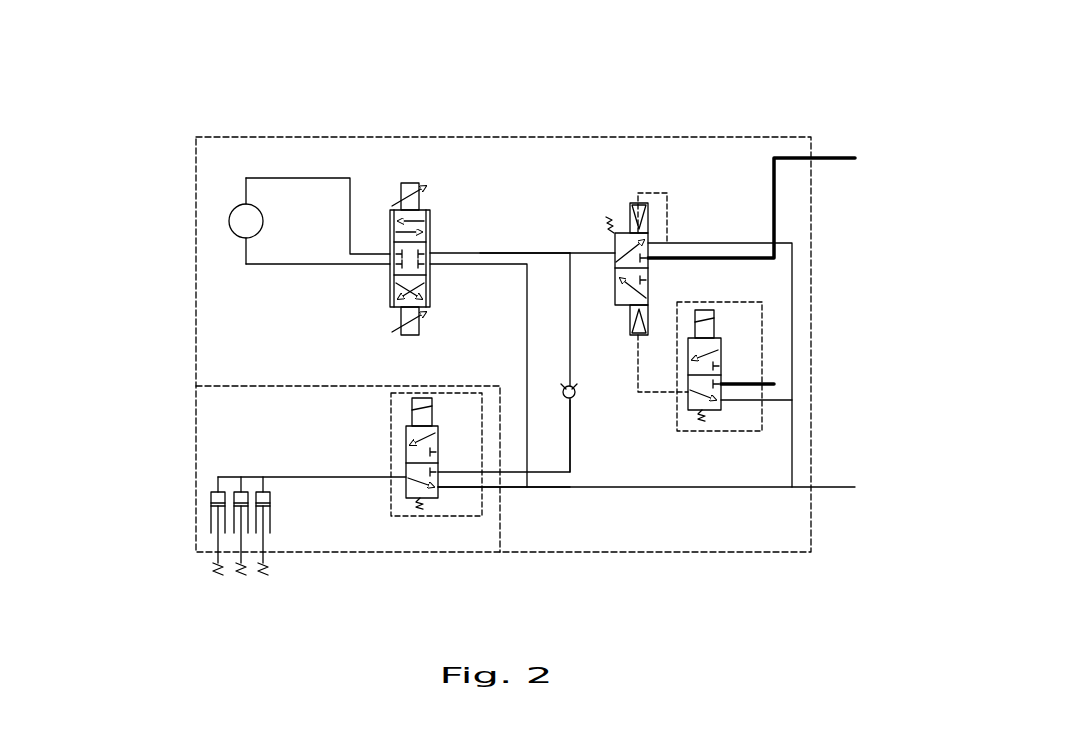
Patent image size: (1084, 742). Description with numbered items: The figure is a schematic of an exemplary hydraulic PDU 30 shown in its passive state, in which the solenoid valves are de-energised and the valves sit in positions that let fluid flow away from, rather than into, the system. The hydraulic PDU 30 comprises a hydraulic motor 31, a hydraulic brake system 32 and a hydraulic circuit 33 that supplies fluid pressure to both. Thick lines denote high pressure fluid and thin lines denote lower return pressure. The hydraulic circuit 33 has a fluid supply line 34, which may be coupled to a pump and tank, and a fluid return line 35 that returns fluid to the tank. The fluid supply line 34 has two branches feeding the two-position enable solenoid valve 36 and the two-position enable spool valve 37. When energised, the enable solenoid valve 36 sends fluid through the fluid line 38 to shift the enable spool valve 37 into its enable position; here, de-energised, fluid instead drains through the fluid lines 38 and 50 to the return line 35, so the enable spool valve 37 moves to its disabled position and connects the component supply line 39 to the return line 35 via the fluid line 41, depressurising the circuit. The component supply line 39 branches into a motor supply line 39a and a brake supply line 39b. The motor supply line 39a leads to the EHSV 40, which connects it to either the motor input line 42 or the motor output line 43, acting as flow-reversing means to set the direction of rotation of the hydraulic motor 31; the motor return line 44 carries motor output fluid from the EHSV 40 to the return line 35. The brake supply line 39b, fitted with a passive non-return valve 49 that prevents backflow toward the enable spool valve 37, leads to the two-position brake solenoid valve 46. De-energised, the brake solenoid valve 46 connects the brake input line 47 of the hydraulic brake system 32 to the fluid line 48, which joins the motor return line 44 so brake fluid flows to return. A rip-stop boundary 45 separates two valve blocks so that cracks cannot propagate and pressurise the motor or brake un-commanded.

The hydraulic PDU 30 is at (792, 122).
The hydraulic motor 31 is at (215, 205).
The hydraulic brake system 32 is at (211, 497).
The hydraulic circuit 33 is at (552, 228).
The fluid supply line 34 is at (822, 159).
The fluid return line 35 is at (815, 487).
The two-position enable solenoid valve 36 is at (720, 410).
The two-position enable spool valve 37 is at (633, 203).
The fluid line 38 is at (658, 392).
The component supply line 39 is at (587, 253).
The motor supply line 39a is at (522, 253).
The brake supply line 39b is at (571, 450).
The EHSV 40 is at (410, 182).
The fluid line 41 is at (793, 363).
The motor input line 42 is at (288, 178).
The motor output line 43 is at (246, 265).
The motor return line 44 is at (527, 297).
The rip-stop boundary 45 is at (218, 386).
The two-position brake solenoid valve 46 is at (431, 500).
The brake input line 47 is at (318, 478).
The fluid line 48 is at (513, 488).
The non-return valve 49 is at (577, 391).
The fluid line 50 is at (775, 401).